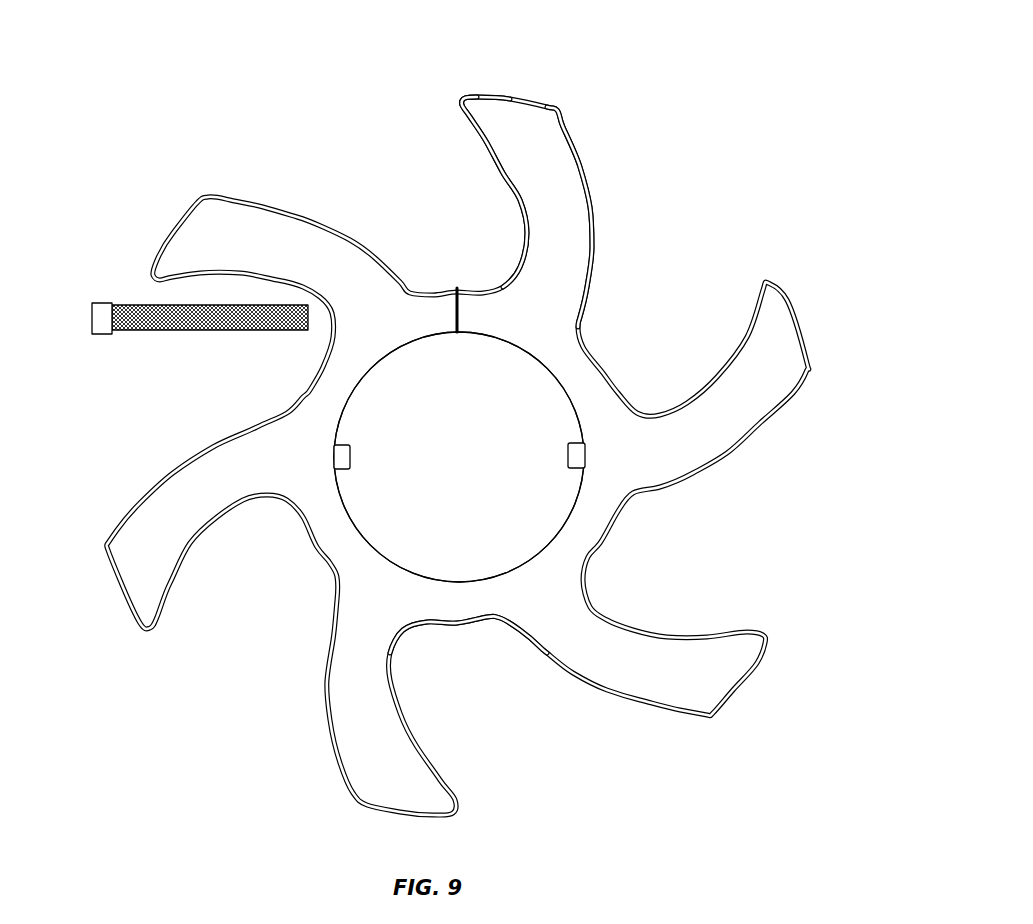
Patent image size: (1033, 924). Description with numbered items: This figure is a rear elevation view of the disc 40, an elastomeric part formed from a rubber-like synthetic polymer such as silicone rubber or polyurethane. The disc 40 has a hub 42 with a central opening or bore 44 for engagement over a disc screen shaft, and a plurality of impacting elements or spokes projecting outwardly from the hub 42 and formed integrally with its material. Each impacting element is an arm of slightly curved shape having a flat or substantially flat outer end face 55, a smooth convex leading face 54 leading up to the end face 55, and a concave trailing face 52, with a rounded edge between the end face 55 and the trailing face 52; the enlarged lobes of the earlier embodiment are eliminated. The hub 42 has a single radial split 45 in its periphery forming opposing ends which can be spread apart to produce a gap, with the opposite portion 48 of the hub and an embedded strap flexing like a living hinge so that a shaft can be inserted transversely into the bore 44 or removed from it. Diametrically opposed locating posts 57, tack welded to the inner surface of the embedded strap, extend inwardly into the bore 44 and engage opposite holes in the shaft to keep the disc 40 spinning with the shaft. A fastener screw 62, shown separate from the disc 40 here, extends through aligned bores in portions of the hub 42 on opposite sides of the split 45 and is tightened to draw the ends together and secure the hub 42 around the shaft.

The disc 40 is at (752, 70).
The hub 42 is at (360, 553).
The central opening or bore 44 is at (499, 491).
The radial split 45 is at (462, 314).
The opposite portion of the hub 48 is at (508, 631).
The concave trailing face 52 is at (500, 175).
The convex leading face 54 is at (590, 182).
The outer end face 55 is at (467, 98).
The locating posts 57 is at (345, 446).
The fastener screw 62 is at (93, 320).